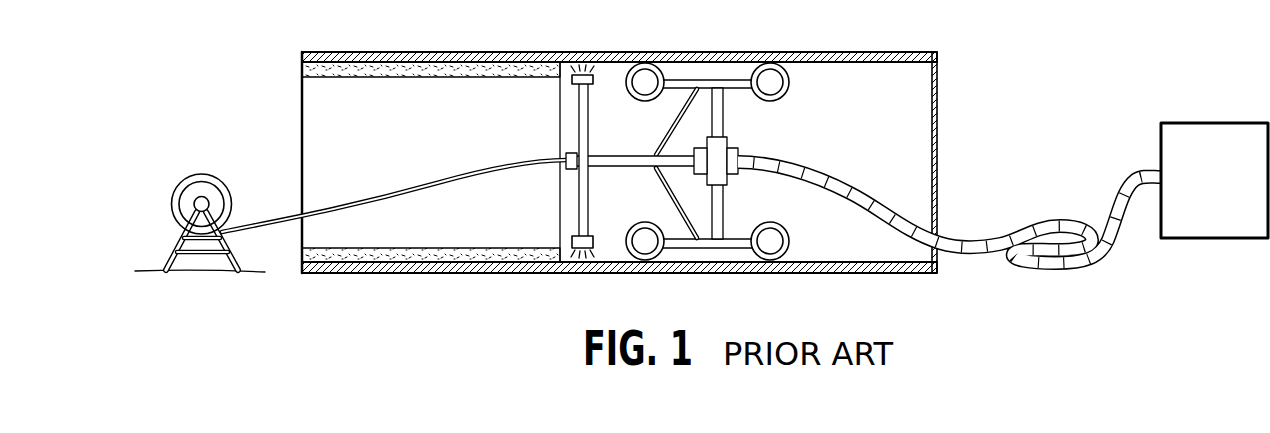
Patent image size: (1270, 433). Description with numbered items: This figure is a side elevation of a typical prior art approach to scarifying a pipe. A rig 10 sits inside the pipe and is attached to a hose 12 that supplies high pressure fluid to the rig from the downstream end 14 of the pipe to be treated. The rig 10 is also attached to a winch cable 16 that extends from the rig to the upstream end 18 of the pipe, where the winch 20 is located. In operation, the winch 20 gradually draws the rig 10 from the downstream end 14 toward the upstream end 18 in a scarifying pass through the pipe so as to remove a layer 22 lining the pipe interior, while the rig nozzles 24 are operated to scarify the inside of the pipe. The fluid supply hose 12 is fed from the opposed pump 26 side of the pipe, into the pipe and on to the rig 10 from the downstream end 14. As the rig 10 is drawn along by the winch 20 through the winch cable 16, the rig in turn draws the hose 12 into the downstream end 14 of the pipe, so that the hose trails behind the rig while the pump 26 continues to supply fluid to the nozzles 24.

The rig 10 is at (704, 80).
The hose 12 is at (873, 197).
The downstream end 14 is at (938, 90).
The winch cable 16 is at (423, 188).
The upstream end 18 is at (300, 95).
The winch 20 is at (196, 183).
The layer 22 is at (488, 53).
The rig nozzles 24 is at (593, 80).
The pump 26 is at (1208, 122).